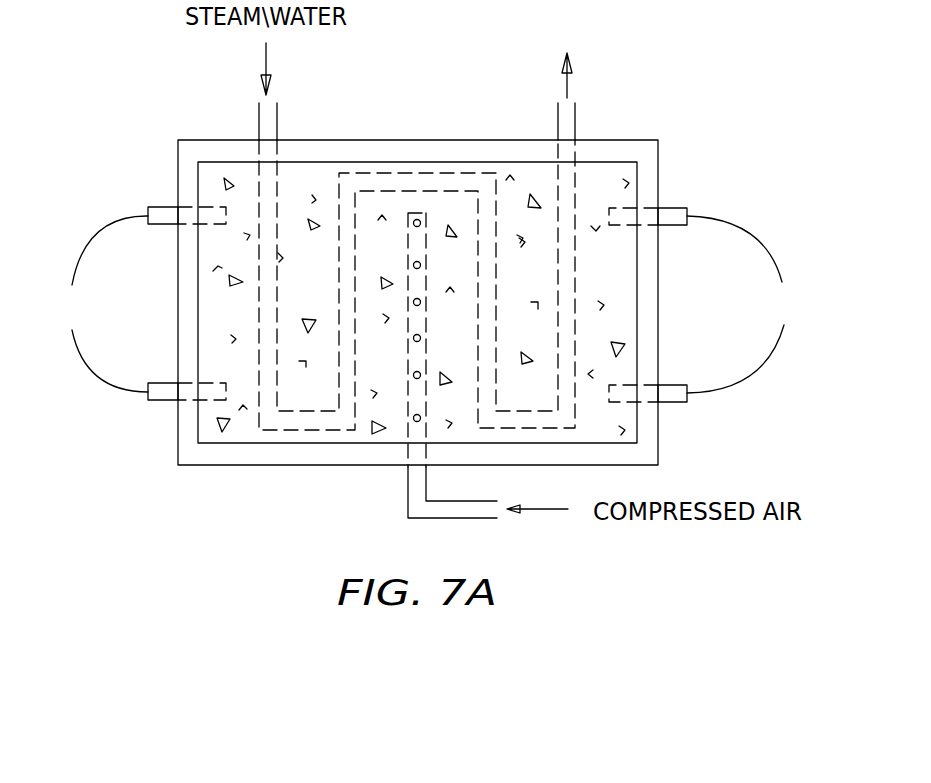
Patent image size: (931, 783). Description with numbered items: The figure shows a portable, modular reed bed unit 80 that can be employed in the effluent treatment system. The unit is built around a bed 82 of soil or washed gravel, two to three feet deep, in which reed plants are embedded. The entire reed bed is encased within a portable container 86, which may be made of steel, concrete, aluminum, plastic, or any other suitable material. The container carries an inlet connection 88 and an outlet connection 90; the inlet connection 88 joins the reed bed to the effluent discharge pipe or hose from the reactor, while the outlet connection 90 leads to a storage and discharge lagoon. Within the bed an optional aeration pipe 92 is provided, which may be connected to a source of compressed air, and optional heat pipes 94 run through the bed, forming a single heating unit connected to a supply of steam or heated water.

The modular reed bed unit 80 is at (132, 461).
The bed 82 is at (323, 288).
The portable container 86 is at (650, 309).
The inlet connection 88 is at (750, 304).
The outlet connection 90 is at (138, 303).
The aeration pipe 92 is at (440, 344).
The heat pipes 94 is at (376, 162).